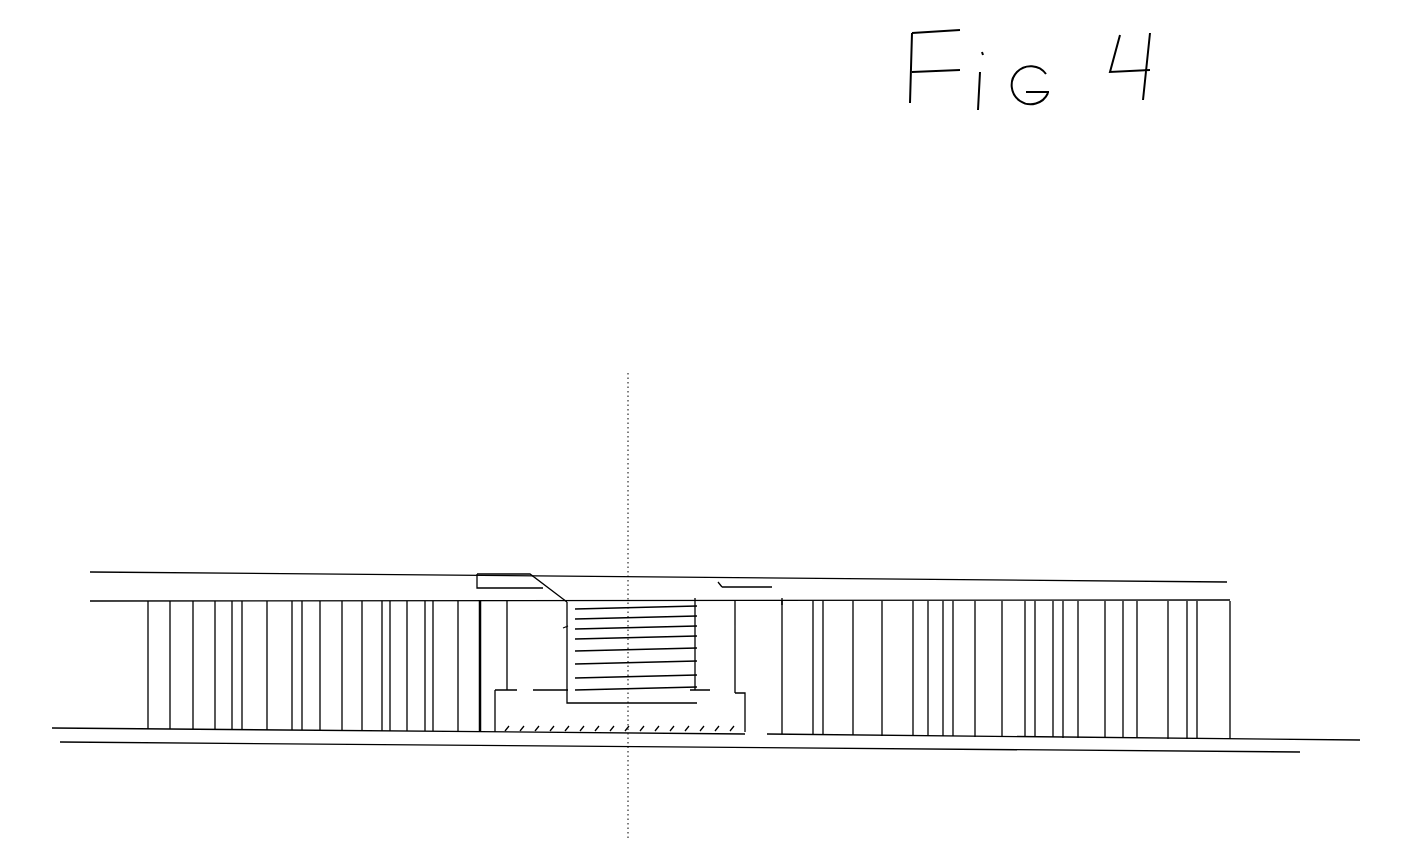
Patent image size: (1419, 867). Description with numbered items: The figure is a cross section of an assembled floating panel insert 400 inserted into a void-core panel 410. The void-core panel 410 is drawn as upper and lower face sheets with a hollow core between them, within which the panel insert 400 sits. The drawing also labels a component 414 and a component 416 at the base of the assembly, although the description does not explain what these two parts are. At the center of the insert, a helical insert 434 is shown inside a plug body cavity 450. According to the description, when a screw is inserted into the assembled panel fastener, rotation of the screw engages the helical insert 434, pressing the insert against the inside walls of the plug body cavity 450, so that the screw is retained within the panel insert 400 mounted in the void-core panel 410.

The panel insert 400 is at (675, 538).
The void-core panel 410 is at (490, 575).
The fin stack 414 is at (535, 658).
The base 416 is at (538, 715).
The helical insert 434 is at (665, 632).
The plug body cavity 450 is at (602, 592).